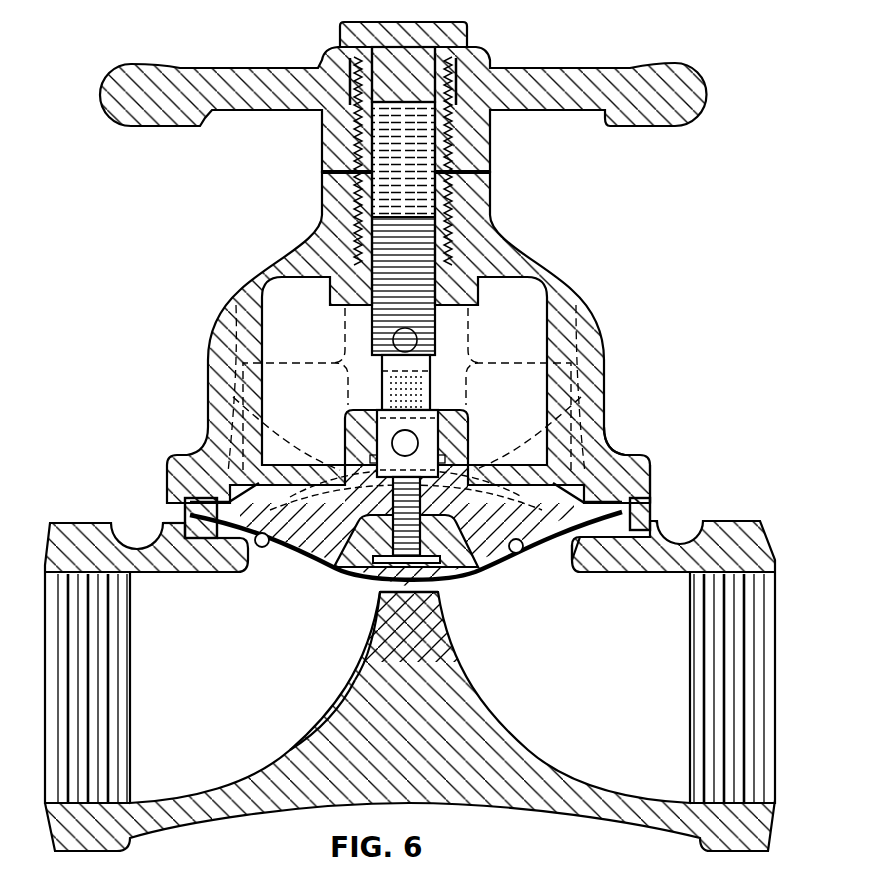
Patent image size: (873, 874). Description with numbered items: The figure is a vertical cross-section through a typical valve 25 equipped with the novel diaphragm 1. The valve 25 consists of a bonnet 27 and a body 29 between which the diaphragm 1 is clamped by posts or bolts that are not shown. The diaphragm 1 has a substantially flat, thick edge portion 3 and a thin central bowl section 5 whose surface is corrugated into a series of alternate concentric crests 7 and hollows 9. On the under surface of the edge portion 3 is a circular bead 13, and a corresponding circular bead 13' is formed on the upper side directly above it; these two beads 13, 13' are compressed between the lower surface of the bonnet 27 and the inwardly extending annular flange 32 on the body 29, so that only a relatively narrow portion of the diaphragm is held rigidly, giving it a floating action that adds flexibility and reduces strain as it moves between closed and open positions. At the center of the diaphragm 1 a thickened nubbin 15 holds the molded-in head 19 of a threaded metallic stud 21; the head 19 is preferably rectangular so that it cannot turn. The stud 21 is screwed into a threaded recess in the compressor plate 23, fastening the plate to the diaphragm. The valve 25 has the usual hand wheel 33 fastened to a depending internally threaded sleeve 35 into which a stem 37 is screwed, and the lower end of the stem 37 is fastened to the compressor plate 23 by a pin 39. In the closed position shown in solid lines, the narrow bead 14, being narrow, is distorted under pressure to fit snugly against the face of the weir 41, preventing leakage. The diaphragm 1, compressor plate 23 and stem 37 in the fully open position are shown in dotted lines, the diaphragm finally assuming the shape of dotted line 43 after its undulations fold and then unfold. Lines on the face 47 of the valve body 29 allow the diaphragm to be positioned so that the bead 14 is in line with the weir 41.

The diaphragm 1 is at (458, 578).
The edge portion 3 is at (640, 508).
The bowl section 5 is at (522, 555).
The crests 7 is at (262, 547).
The hollows 9 is at (514, 555).
The circular bead 13 is at (189, 560).
The circular bead 13' is at (173, 517).
The narrow bead 14 is at (375, 625).
The nubbin 15 is at (372, 585).
The head 19 is at (450, 585).
The threaded metallic stud 21 is at (357, 572).
The compressor plate 23 is at (503, 470).
The valve 25 is at (612, 432).
The bonnet 27 is at (583, 313).
The body 29 is at (512, 730).
The annular flange 32 is at (590, 570).
The hand wheel 33 is at (523, 68).
The internally threaded cylinder or sleeve 35 is at (457, 145).
The stem 37 is at (440, 328).
The pin 39 is at (415, 432).
The weir 41 is at (366, 650).
The dotted line 43 is at (312, 470).
The face 47 is at (652, 480).